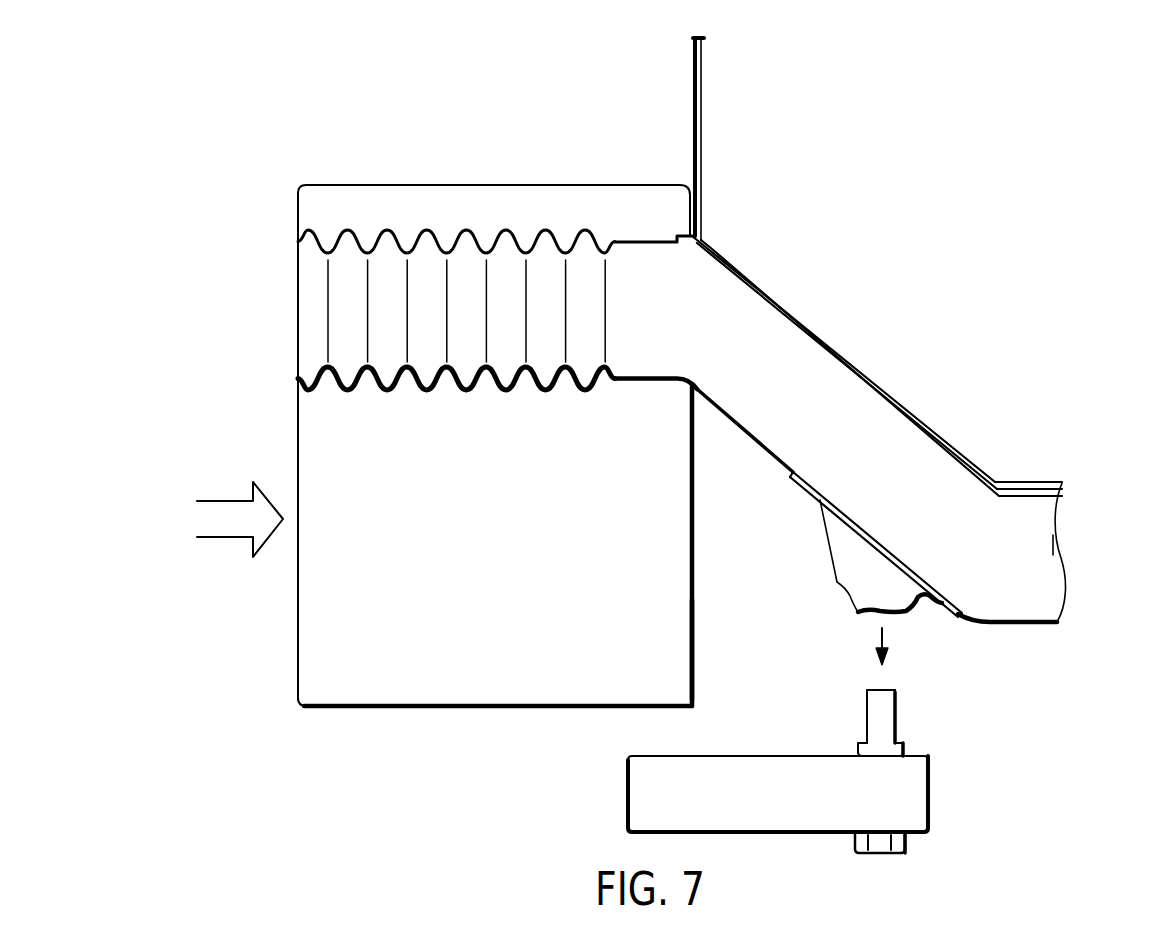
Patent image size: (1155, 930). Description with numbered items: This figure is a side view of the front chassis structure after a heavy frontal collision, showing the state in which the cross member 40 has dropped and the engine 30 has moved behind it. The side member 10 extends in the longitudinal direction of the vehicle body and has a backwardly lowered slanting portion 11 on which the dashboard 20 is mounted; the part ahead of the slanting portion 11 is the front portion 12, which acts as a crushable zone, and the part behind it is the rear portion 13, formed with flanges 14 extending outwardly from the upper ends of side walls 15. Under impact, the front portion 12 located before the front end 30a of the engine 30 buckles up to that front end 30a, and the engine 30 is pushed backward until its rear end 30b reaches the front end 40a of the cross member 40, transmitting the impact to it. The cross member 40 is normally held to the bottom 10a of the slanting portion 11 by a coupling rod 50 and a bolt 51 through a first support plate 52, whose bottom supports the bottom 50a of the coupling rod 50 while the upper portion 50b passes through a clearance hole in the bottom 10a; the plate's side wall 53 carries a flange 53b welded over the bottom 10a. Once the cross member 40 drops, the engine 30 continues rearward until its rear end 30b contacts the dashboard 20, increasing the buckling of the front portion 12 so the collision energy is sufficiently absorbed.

The side member 10 is at (650, 357).
The bottom of the slanting portion 10a is at (792, 472).
The slanting portion 11 is at (965, 573).
The front portion 12 is at (620, 258).
The rear portion 13 is at (1045, 596).
The flange 14 is at (1060, 494).
The side wall 15 is at (1053, 530).
The dashboard 20 is at (848, 357).
The engine 30 is at (448, 690).
The front end of the engine 30a is at (298, 648).
The rear end of the engine 30b is at (695, 642).
The cross member 40 is at (930, 787).
The front end of the cross member 40a is at (628, 789).
The coupling rod 50 is at (896, 714).
The bottom of the coupling rod 50a is at (905, 762).
The upper portion of the coupling rod 50b is at (868, 695).
The bolt 51 is at (905, 842).
The first support plate 52 is at (838, 566).
The side wall of the first support plate 53 is at (823, 533).
The flange of the side wall 53b is at (874, 540).